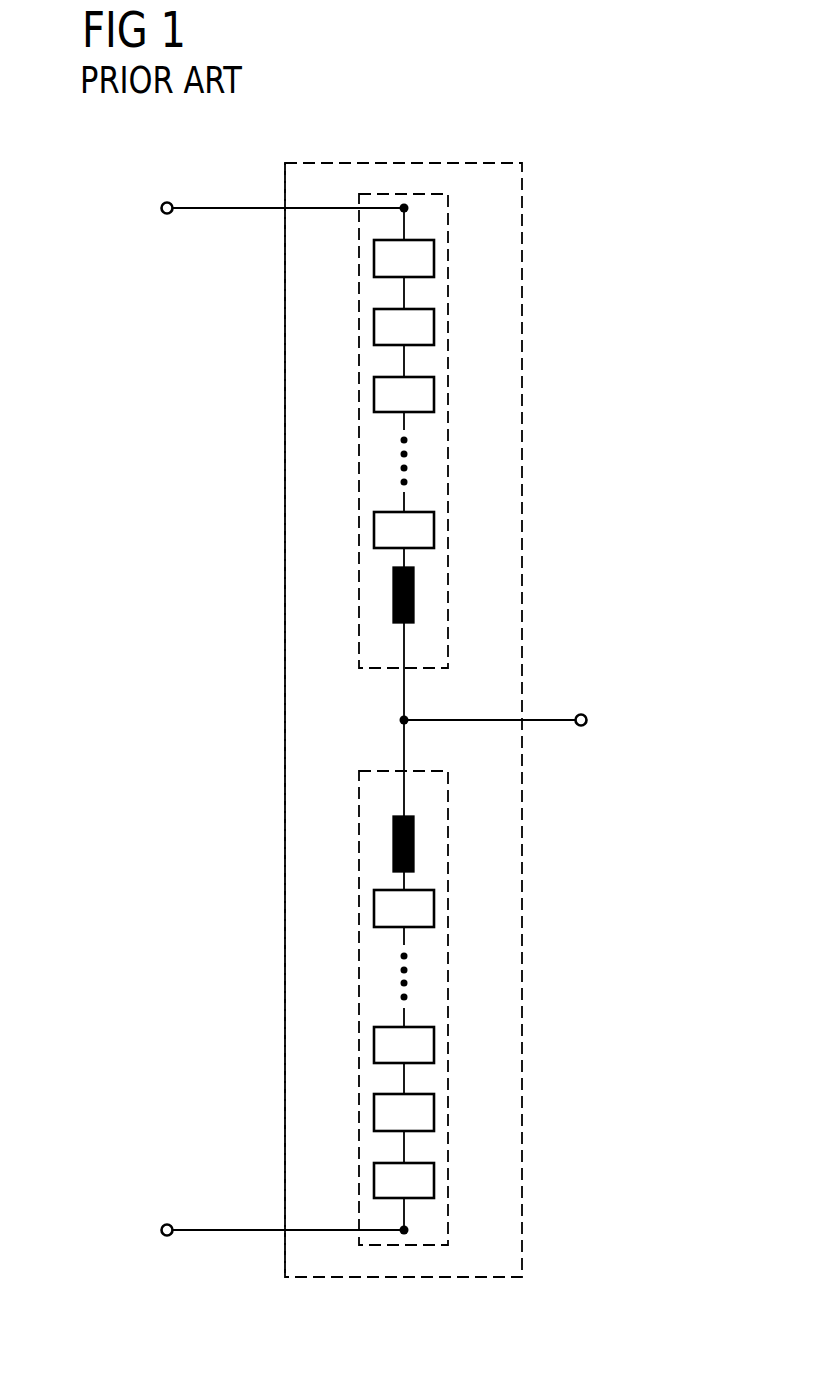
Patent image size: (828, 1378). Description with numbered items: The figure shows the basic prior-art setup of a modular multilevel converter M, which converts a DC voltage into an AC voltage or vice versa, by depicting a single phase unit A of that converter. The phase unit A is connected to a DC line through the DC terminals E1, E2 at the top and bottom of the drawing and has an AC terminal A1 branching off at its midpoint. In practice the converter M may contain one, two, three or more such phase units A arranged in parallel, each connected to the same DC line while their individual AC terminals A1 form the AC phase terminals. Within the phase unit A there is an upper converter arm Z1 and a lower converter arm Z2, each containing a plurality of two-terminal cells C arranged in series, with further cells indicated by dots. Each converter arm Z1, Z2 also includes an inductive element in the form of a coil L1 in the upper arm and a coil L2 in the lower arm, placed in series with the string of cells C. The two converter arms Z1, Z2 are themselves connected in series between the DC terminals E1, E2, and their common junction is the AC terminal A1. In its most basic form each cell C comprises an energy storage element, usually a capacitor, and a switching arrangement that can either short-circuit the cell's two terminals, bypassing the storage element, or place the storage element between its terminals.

The modular multilevel converter M is at (572, 179).
The phase unit A is at (285, 268).
The DC terminal E1 is at (160, 207).
The DC terminal E2 is at (160, 1229).
The AC terminal A1 is at (587, 718).
The upper converter arm Z1 is at (448, 477).
The lower converter arm Z2 is at (448, 977).
The two-terminal cell C is at (434, 261).
The coil L1 is at (414, 600).
The coil L2 is at (414, 848).